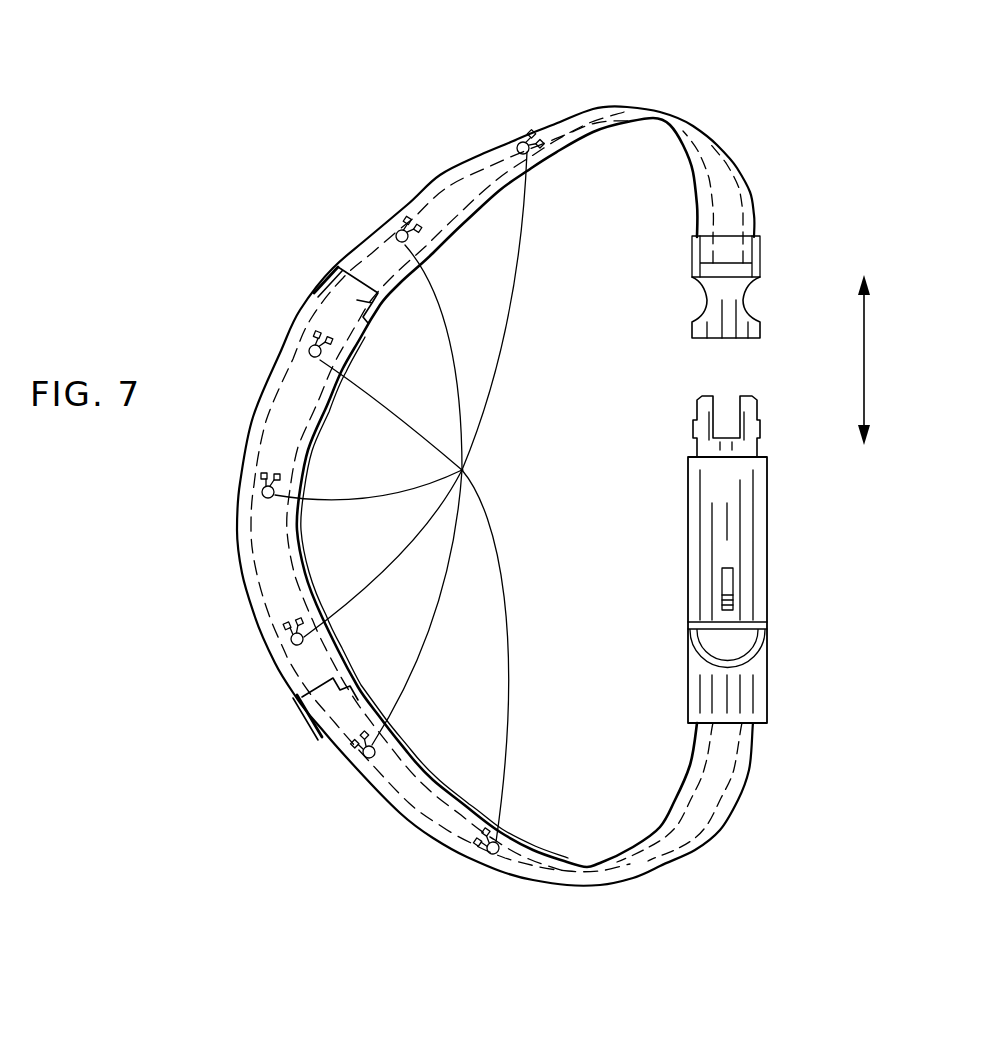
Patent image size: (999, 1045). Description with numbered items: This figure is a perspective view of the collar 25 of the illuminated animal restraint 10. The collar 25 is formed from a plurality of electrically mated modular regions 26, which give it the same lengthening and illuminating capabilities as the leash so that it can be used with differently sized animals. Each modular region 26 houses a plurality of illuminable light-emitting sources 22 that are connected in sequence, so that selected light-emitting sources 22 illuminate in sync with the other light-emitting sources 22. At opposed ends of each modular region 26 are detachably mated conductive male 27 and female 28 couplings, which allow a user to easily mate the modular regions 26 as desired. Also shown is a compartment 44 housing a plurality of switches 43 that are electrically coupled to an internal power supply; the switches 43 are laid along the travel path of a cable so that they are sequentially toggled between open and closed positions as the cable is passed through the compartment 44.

The illuminated band device 10 is at (940, 168).
The light-emitting sources 22 is at (462, 470).
The collar 25 is at (262, 378).
The modular regions 26 is at (368, 237).
The male coupling 27 is at (368, 323).
The female coupling 28 is at (362, 275).
The switches 43 is at (728, 580).
The compartment 44 is at (770, 568).